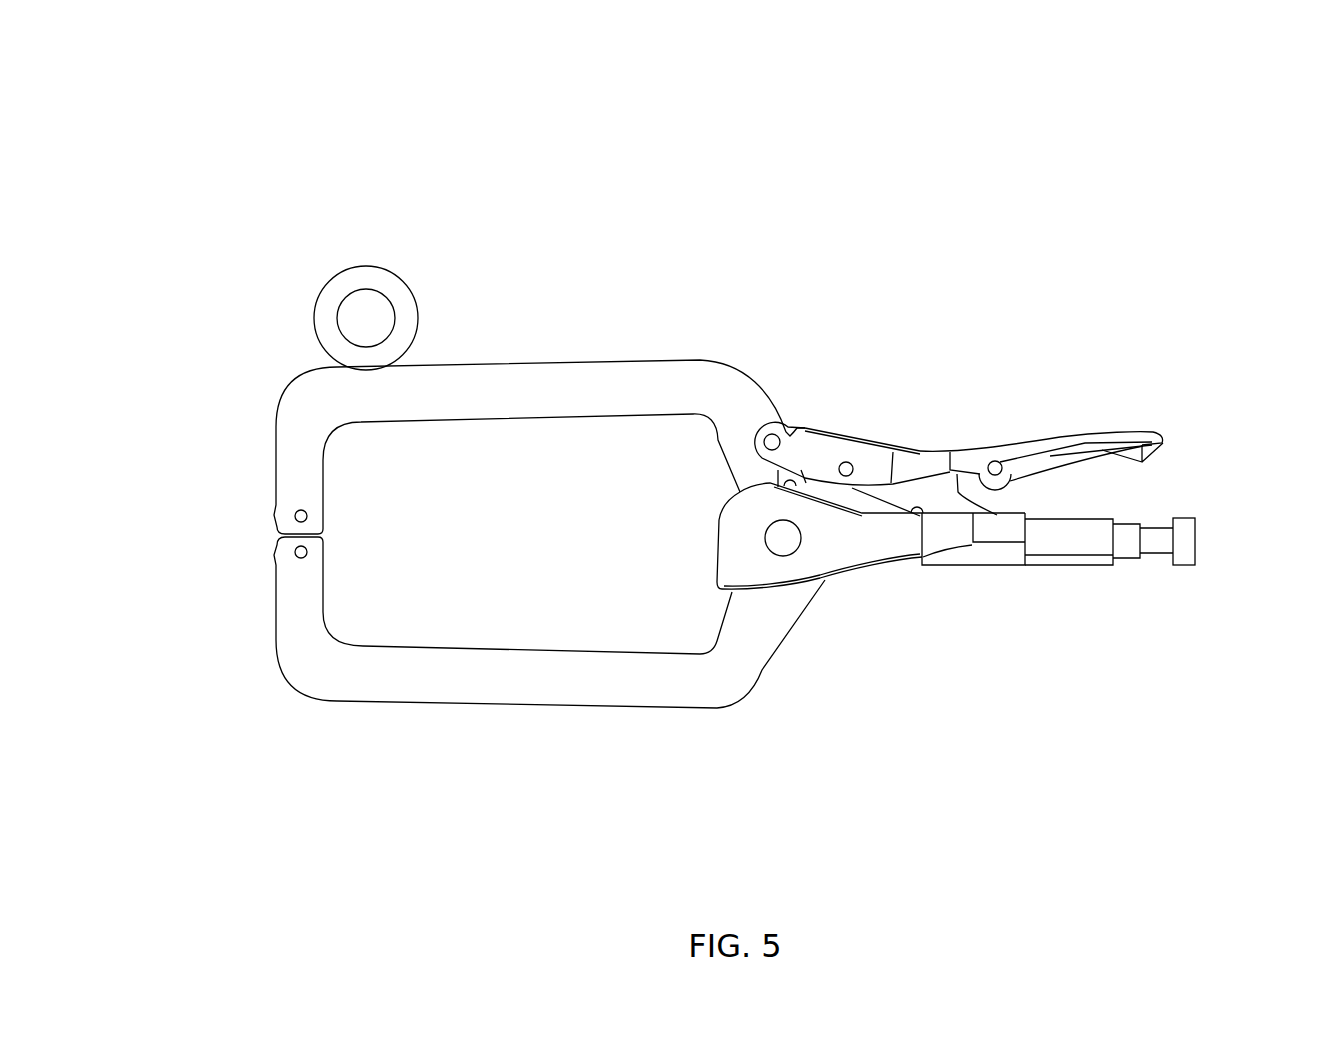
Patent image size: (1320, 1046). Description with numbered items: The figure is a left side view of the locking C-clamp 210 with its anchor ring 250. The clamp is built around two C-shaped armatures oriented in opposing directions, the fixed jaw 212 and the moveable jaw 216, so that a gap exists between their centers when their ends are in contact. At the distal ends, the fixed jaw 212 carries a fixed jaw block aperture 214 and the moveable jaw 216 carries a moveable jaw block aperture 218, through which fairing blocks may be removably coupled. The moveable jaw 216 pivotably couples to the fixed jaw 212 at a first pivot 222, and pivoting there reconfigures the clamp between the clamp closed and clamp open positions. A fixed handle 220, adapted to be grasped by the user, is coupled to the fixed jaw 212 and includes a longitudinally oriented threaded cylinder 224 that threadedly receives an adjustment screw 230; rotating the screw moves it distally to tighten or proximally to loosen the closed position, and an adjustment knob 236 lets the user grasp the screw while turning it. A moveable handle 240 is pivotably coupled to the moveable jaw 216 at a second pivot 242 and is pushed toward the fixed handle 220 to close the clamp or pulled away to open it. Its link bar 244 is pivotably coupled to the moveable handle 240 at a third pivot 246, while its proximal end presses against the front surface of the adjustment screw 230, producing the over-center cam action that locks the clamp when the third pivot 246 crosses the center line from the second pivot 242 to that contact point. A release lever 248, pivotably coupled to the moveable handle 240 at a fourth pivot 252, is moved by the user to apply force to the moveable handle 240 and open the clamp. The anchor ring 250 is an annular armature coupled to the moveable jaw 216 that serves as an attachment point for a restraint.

The locking C-clamp 210 is at (185, 210).
The fixed jaw 212 is at (550, 690).
The fixed jaw block aperture 214 is at (296, 557).
The moveable jaw 216 is at (592, 383).
The moveable jaw block aperture 218 is at (296, 512).
The fixed handle 220 is at (880, 560).
The first pivot 222 is at (787, 548).
The threaded cylinder 224 is at (1070, 543).
The adjustment screw 230 is at (1160, 543).
The adjustment knob 236 is at (1197, 524).
The moveable handle 240 is at (912, 462).
The second pivot 242 is at (777, 436).
The link bar 244 is at (940, 492).
The third pivot 246 is at (849, 465).
The release lever 248 is at (1155, 451).
The anchor ring 250 is at (365, 280).
The fourth pivot 252 is at (997, 463).